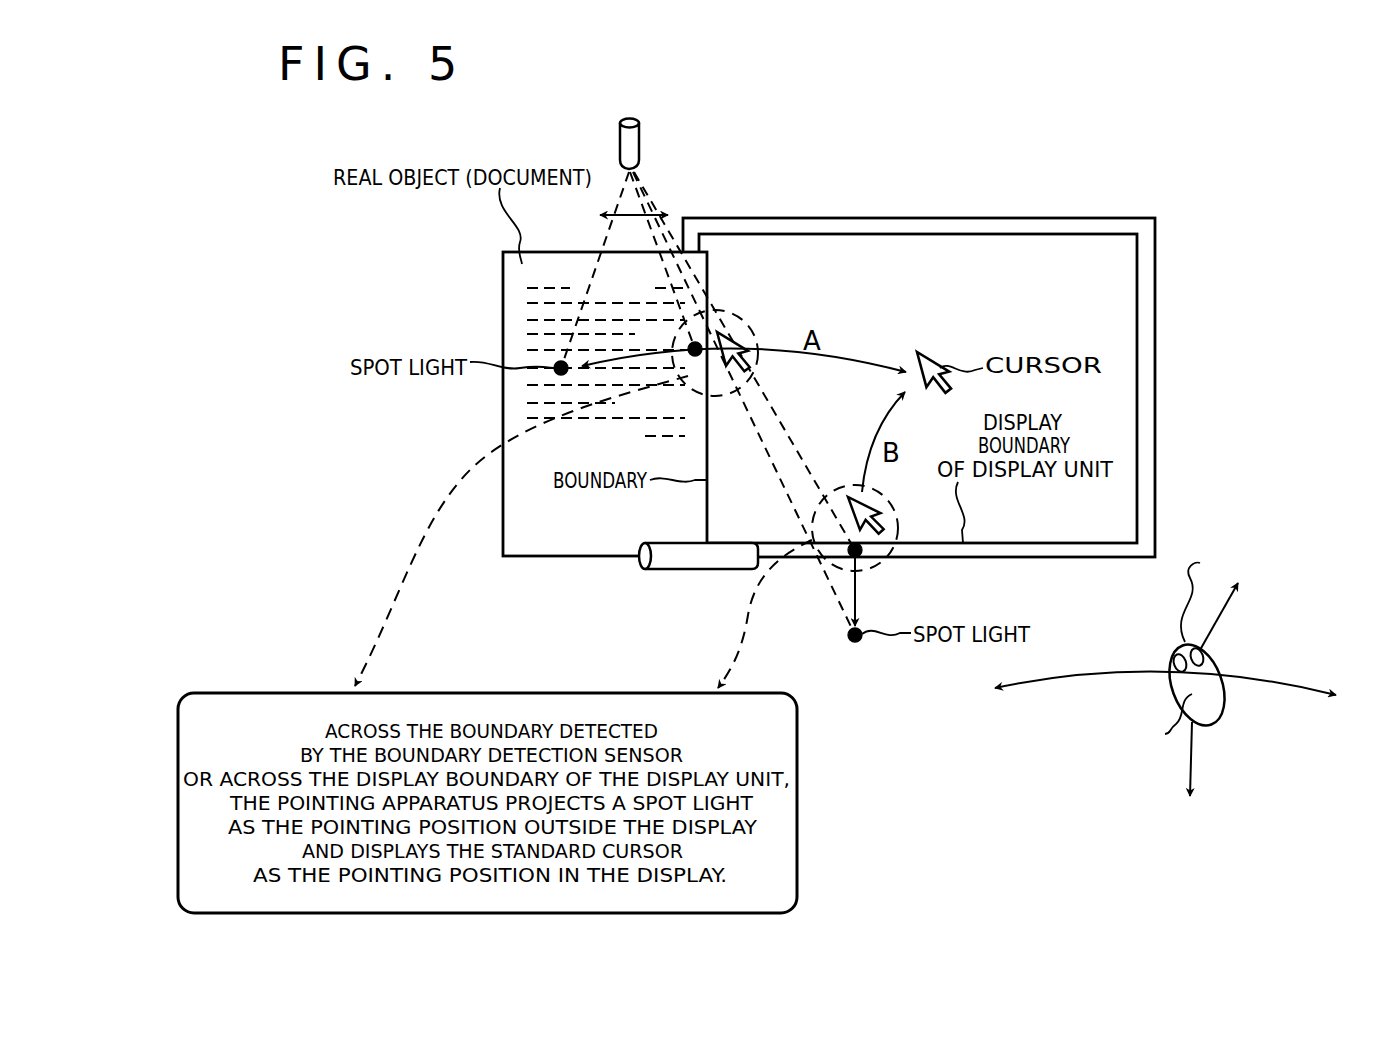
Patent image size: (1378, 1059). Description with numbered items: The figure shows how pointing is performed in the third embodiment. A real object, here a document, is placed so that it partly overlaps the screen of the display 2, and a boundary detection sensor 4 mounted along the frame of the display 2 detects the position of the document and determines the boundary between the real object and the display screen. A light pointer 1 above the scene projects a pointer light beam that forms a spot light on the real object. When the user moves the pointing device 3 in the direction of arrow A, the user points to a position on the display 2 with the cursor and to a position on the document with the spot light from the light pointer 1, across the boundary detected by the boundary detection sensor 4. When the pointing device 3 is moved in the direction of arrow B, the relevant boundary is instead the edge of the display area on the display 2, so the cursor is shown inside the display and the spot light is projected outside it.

The light pointer 1 is at (640, 128).
The display 2 is at (985, 249).
The pointing device 3 is at (1149, 679).
The boundary detection sensor 4 is at (624, 604).